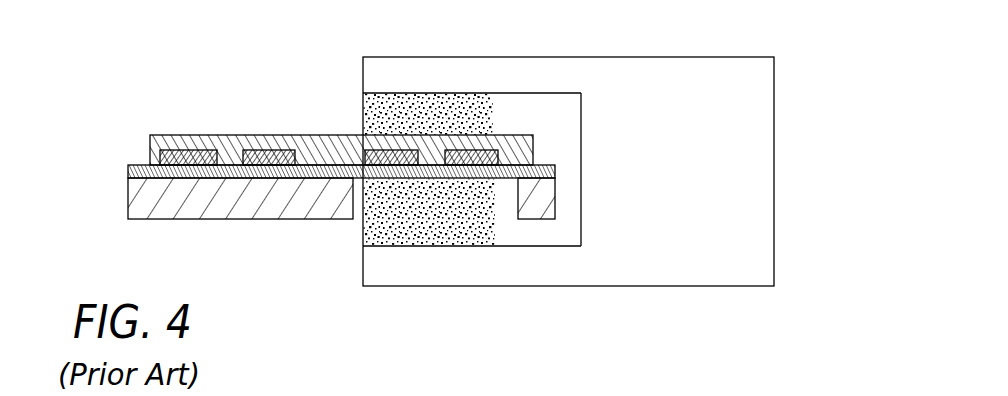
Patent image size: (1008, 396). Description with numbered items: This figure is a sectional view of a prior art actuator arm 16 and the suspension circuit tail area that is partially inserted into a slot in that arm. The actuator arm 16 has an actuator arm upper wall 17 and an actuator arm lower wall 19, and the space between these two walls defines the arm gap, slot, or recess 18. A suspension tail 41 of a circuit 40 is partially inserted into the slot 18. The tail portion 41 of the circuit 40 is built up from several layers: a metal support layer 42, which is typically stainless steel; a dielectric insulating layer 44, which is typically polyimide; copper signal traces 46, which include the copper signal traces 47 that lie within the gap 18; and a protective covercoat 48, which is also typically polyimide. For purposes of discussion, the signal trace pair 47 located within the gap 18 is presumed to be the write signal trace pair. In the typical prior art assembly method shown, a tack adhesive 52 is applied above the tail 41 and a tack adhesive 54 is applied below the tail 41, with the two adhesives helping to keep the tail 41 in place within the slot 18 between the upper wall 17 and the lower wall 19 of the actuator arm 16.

The actuator arm 16 is at (625, 171).
The actuator arm upper wall 17 is at (385, 57).
The arm gap, slot, or recess 18 is at (503, 208).
The actuator arm lower wall 19 is at (449, 263).
The circuit 40 is at (330, 140).
The suspension tail 41 is at (354, 90).
The metal support layer 42 is at (260, 220).
The dielectric insulating layer 44 is at (120, 173).
The copper signal traces 46 is at (172, 160).
The copper signal traces within gap 47 is at (487, 158).
The protective covercoat 48 is at (274, 134).
The tack adhesive 52 is at (458, 104).
The tack adhesive 54 is at (380, 218).